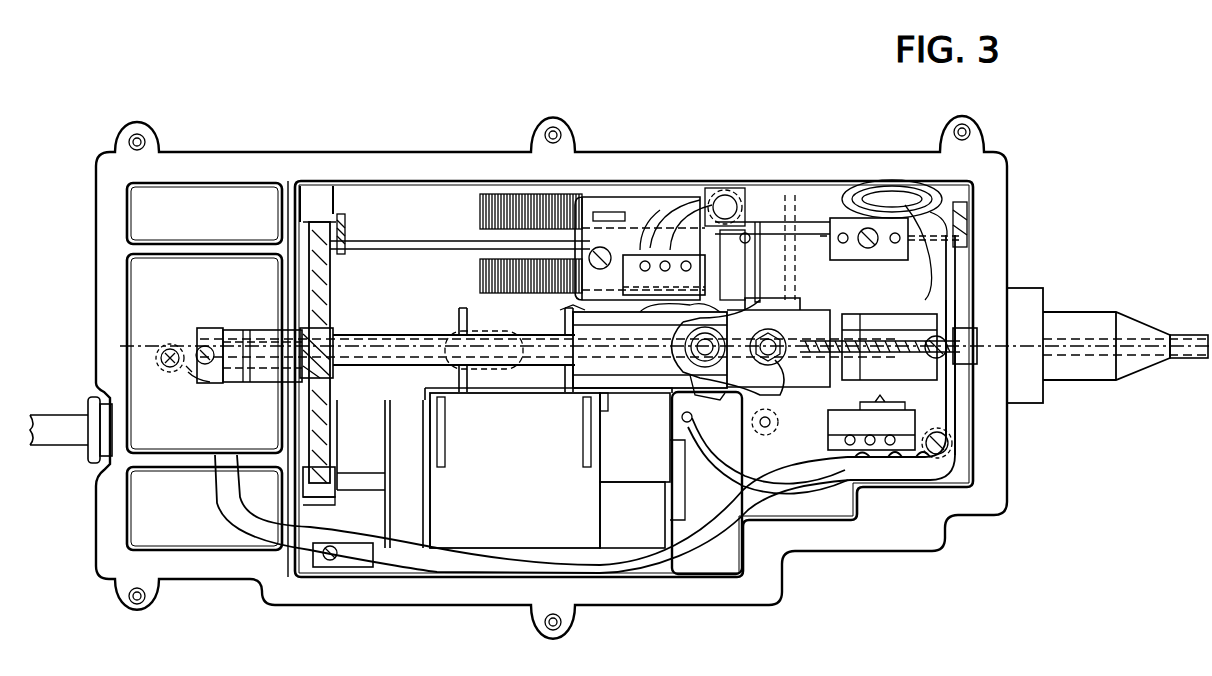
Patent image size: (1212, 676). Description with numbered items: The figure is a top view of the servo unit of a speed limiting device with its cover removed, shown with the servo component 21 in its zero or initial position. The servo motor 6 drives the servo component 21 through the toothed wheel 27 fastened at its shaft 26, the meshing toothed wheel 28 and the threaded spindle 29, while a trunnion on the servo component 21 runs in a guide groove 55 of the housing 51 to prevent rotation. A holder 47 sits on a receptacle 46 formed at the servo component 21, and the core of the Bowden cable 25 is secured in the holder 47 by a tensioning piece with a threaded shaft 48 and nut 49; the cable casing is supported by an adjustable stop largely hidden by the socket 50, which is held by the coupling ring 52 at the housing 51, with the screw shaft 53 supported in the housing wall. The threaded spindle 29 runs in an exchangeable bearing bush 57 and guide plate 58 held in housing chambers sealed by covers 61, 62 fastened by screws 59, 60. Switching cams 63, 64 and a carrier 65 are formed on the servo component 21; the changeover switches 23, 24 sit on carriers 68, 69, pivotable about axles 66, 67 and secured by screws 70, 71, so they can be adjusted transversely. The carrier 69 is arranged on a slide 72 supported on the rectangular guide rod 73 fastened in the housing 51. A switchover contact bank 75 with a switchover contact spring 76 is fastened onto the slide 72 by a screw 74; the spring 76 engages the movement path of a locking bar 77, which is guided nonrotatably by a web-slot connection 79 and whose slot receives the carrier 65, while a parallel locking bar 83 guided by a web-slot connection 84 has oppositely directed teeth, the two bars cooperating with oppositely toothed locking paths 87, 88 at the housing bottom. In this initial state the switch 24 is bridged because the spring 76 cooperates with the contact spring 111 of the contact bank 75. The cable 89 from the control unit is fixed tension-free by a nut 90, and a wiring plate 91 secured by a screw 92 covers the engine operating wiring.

The servo motor 6 is at (516, 527).
The servo component 21 is at (558, 378).
The switch 23 is at (828, 425).
The switch 24 is at (612, 312).
The Bowden cable 25 is at (1203, 333).
The shaft 26 is at (378, 488).
The toothed wheel 27 is at (322, 500).
The toothed wheel 28 is at (333, 380).
The threaded spindle 29 is at (398, 350).
The receptacle 46 is at (680, 347).
The holder 47 is at (755, 415).
The threaded shaft 48 is at (815, 310).
The nut 49 is at (790, 372).
The socket 50 is at (1100, 375).
The housing 51 is at (922, 555).
The coupling ring 52 is at (1030, 395).
The screw shaft 53 is at (975, 335).
The guide groove 55 is at (465, 340).
The bearing bush 57 is at (256, 340).
The guide plate 58 is at (210, 345).
The screw 59 is at (930, 338).
The screw 60 is at (182, 350).
The cover 61 is at (868, 320).
The cover 62 is at (195, 382).
The switching cam 63 is at (650, 350).
The switching cam 64 is at (890, 395).
The carrier 65 is at (850, 195).
The axle 66 is at (758, 427).
The axle 67 is at (840, 180).
The carrier 68 is at (930, 428).
The carrier 69 is at (632, 250).
The screw 70 is at (960, 440).
The screw 71 is at (540, 290).
The slide 72 is at (598, 208).
The guide rod 73 is at (380, 252).
The screw 74 is at (870, 215).
The switchover contact bank 75 is at (782, 215).
The switchover contact spring 76 is at (718, 196).
The locking bar 77 is at (690, 330).
The web-slot connection 79 is at (780, 232).
The locking bar 83 is at (735, 190).
The web-slot connection 84 is at (675, 192).
The locking path 87 is at (500, 205).
The locking path 88 is at (483, 272).
The cable 89 is at (62, 445).
The nut 90 is at (88, 400).
The wiring plate 91 is at (170, 297).
The screw 92 is at (140, 352).
The contact spring 111 is at (790, 195).